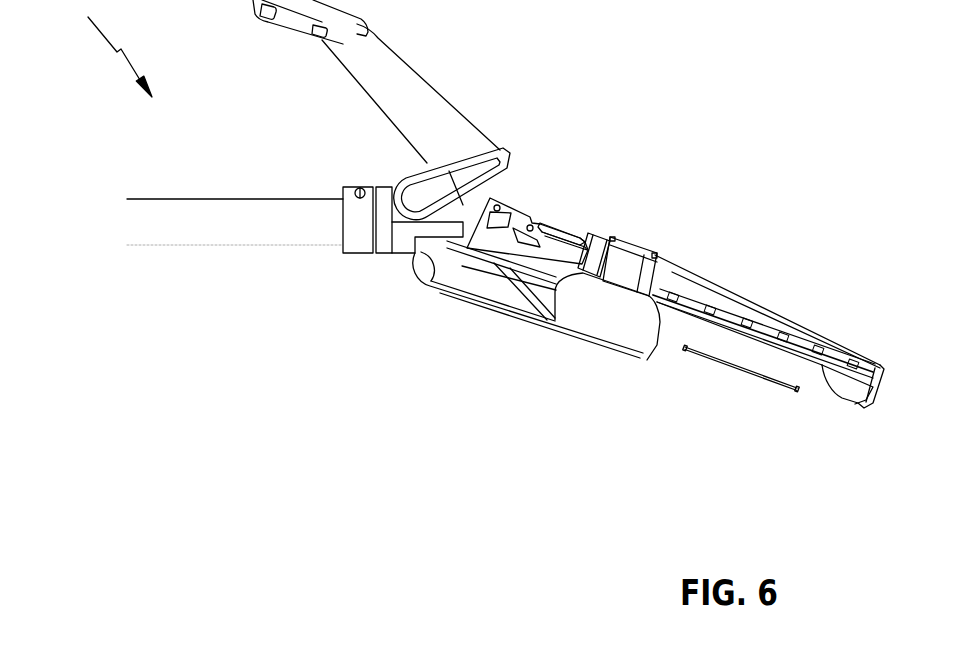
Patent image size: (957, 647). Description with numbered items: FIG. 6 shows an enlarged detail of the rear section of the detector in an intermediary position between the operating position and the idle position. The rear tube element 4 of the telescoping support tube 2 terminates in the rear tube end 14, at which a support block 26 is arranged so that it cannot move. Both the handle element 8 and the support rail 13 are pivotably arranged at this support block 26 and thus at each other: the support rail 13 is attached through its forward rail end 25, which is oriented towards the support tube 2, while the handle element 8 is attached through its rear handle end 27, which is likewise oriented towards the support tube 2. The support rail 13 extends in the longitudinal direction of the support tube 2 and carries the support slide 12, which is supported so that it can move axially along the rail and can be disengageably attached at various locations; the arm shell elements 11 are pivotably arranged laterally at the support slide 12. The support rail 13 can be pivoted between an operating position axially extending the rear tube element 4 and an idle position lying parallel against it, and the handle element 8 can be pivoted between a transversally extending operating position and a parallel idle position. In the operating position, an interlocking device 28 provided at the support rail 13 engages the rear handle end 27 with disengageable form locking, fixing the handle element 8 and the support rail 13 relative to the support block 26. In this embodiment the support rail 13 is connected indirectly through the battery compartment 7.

The telescoping support tube 2 is at (147, 229).
The rear tube element 4 is at (235, 266).
The battery compartment 7 is at (525, 302).
The handle element 8 is at (348, 43).
The arm shell elements 11 is at (643, 352).
The support slide 12 is at (659, 275).
The support rail 13 is at (803, 373).
The rear tube end 14 is at (297, 223).
The forward rail end 25 is at (520, 252).
The support block 26 is at (393, 233).
The rear handle end 27 is at (467, 157).
The interlocking device 28 is at (555, 222).